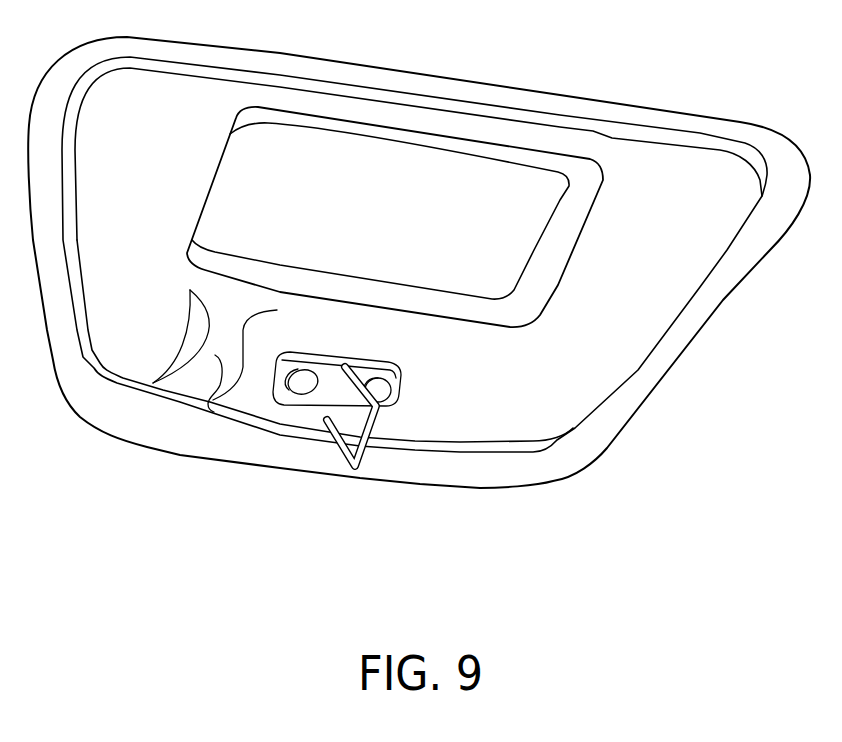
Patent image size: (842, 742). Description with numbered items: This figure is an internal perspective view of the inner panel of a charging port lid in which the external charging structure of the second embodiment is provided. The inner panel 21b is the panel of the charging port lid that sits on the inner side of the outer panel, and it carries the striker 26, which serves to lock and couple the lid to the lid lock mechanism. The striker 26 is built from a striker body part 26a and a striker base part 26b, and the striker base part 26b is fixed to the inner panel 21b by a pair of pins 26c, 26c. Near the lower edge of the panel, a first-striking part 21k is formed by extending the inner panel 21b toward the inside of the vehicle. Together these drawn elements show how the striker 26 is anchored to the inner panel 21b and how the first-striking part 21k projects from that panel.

The inner panel 21b is at (697, 181).
The first-striking part 21k is at (212, 396).
The striker 26 is at (278, 459).
The striker body part 26a is at (345, 447).
The striker base part 26b is at (308, 406).
The pins 26c is at (301, 389).